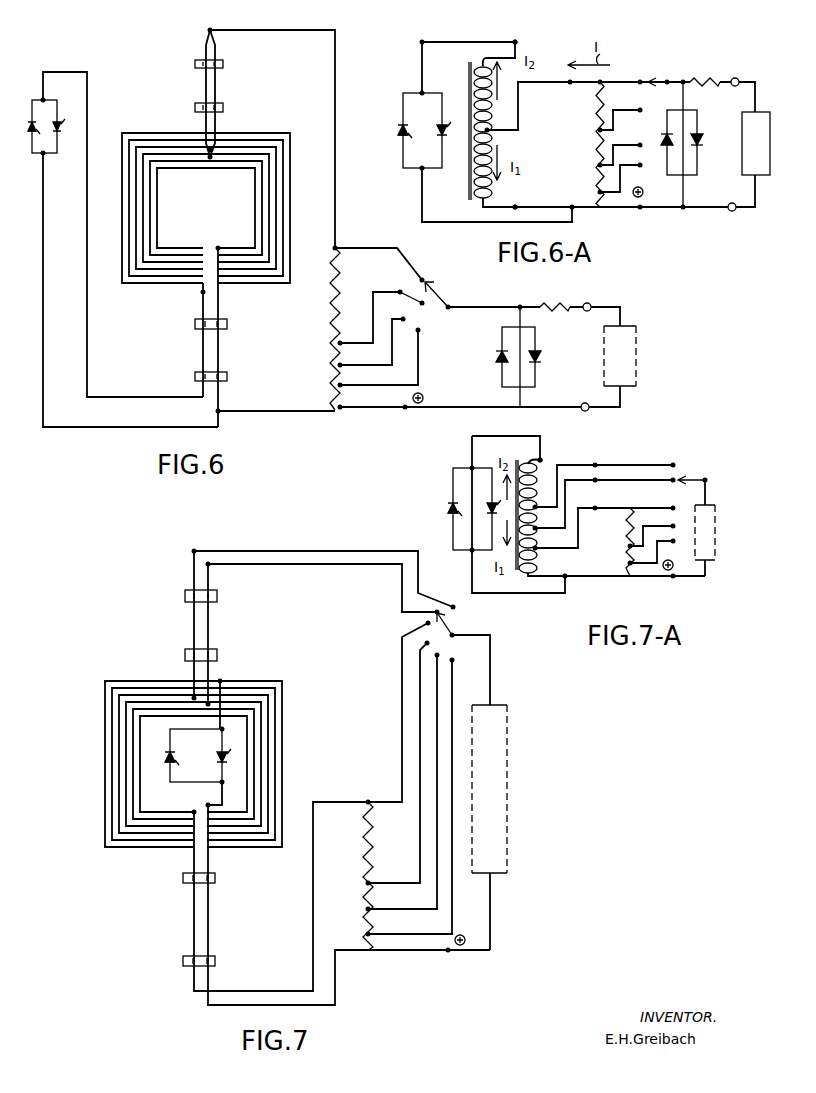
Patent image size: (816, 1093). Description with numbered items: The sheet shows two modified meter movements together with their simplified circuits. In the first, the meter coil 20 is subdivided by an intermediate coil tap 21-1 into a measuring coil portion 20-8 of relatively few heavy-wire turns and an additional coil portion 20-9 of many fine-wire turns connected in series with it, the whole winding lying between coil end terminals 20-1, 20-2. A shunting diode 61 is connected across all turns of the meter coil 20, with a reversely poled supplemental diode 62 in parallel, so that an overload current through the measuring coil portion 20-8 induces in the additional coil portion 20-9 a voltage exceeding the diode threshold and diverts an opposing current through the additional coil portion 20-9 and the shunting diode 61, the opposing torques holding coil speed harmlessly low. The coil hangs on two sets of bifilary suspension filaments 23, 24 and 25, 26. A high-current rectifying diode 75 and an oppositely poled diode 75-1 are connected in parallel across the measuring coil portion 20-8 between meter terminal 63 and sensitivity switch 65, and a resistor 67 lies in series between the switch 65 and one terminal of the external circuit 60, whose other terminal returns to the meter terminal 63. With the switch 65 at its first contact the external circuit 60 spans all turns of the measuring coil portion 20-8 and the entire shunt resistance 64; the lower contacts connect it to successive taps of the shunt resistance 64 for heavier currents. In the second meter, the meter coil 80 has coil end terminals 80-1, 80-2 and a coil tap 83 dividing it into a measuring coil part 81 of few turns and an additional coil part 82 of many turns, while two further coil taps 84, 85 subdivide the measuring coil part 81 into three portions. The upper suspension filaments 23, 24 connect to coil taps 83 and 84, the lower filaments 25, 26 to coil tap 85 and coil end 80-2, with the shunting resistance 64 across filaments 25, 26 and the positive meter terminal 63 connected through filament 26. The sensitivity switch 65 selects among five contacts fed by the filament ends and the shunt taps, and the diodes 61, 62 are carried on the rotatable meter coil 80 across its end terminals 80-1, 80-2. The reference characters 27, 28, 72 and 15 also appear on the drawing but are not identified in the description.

In FIG. 6, the meter coil 20 is at (141, 113).
In FIG. 6-A, the meter coil 20 is at (473, 56).
In FIG. 6, the coil end terminal 20-1 is at (201, 294).
In FIG. 6-A, the coil end terminal 20-1 is at (530, 32).
In FIG. 6, the coil end terminal 20-2 is at (222, 248).
In FIG. 6-A, the coil end terminal 20-2 is at (513, 207).
In FIG. 6, the measuring coil portion 20-8 is at (191, 165).
In FIG. 6-A, the measuring coil portion 20-8 is at (490, 195).
In FIG. 6-A, the additional coil portion 20-9 is at (490, 125).
In FIG. 6, the intermediate coil tap 21-1 is at (210, 160).
In FIG. 6-A, the intermediate coil tap 21-1 is at (490, 131).
In FIG. 6, the suspension filament 23 is at (205, 72).
In FIG. 6-A, the suspension filament 23 is at (532, 88).
In FIG. 7, the suspension filament 23 is at (192, 634).
In FIG. 7-A, the suspension filament 23 is at (557, 470).
In FIG. 6, the suspension filament 24 is at (216, 90).
In FIG. 7, the suspension filament 24 is at (209, 637).
In FIG. 7-A, the suspension filament 24 is at (566, 494).
In FIG. 6, the suspension filament 25 is at (200, 350).
In FIG. 6-A, the suspension filament 25 is at (467, 38).
In FIG. 7, the suspension filament 25 is at (191, 926).
In FIG. 6, the suspension filament 26 is at (220, 350).
In FIG. 6-A, the suspension filament 26 is at (556, 193).
In FIG. 7, the suspension filament 26 is at (212, 920).
In FIG. 7-A, the suspension filament 26 is at (597, 587).
In FIG. 6, the clamp 27 is at (223, 64).
In FIG. 7, the clamp 27 is at (217, 596).
In FIG. 6, the clamp 28 is at (223, 110).
In FIG. 7, the clamp 28 is at (217, 655).
In FIG. 6, the external circuit 60 is at (638, 356).
In FIG. 6-A, the external circuit 60 is at (738, 160).
In FIG. 7, the external circuit 60 is at (500, 788).
In FIG. 7-A, the external circuit 60 is at (714, 544).
In FIG. 6, the shunting diode 61 is at (60, 118).
In FIG. 6-A, the shunting diode 61 is at (397, 125).
In FIG. 7, the shunting diode 61 is at (176, 757).
In FIG. 7-A, the shunting diode 61 is at (456, 510).
In FIG. 6, the supplemental rectifying junction diode 62 is at (30, 143).
In FIG. 6-A, the supplemental rectifying junction diode 62 is at (424, 131).
In FIG. 7, the supplemental rectifying junction diode 62 is at (219, 755).
In FIG. 7-A, the supplemental rectifying junction diode 62 is at (490, 500).
In FIG. 6, the meter terminal 63 is at (405, 410).
In FIG. 6-A, the meter terminal 63 is at (641, 210).
In FIG. 7, the meter terminal 63 is at (450, 953).
In FIG. 7-A, the meter terminal 63 is at (682, 583).
In FIG. 6, the shunt resistance 64 is at (342, 300).
In FIG. 6-A, the shunt resistance 64 is at (607, 96).
In FIG. 7-A, the shunt resistance 64 is at (630, 548).
In FIG. 6, the sensitivity switch 65 is at (438, 296).
In FIG. 6-A, the sensitivity switch 65 is at (672, 68).
In FIG. 7, the sensitivity switch 65 is at (452, 635).
In FIG. 7-A, the sensitivity switch 65 is at (698, 478).
In FIG. 6, the resistor 67 is at (566, 289).
In FIG. 6-A, the resistor 67 is at (718, 63).
In FIG. 6, the coil winding 72 is at (206, 200).
In FIG. 6, the rectifying junction diode 75 is at (495, 359).
In FIG. 6-A, the rectifying junction diode 75 is at (678, 138).
In FIG. 6, the silicon diode 75-1 is at (541, 359).
In FIG. 6-A, the silicon diode 75-1 is at (700, 142).
In FIG. 7, the meter coil 80 is at (297, 717).
In FIG. 7-A, the meter coil 80 is at (522, 444).
In FIG. 7, the coil end terminal 80-1 is at (222, 681).
In FIG. 7-A, the coil end terminal 80-1 is at (542, 459).
In FIG. 7, the coil end terminal 80-2 is at (211, 797).
In FIG. 7-A, the coil end terminal 80-2 is at (566, 574).
In FIG. 7, the measuring coil part 81 is at (145, 715).
In FIG. 7-A, the measuring coil part 81 is at (528, 573).
In FIG. 7, the additional coil part 82 is at (152, 825).
In FIG. 7-A, the additional coil part 82 is at (537, 490).
In FIG. 7, the coil tap 83 is at (192, 695).
In FIG. 7-A, the coil tap 83 is at (544, 515).
In FIG. 7, the coil tap 84 is at (206, 707).
In FIG. 7-A, the coil tap 84 is at (545, 535).
In FIG. 7, the coil tap 85 is at (193, 810).
In FIG. 7-A, the coil tap 85 is at (545, 558).
In FIG. 7-A, the conductor 15 is at (579, 522).